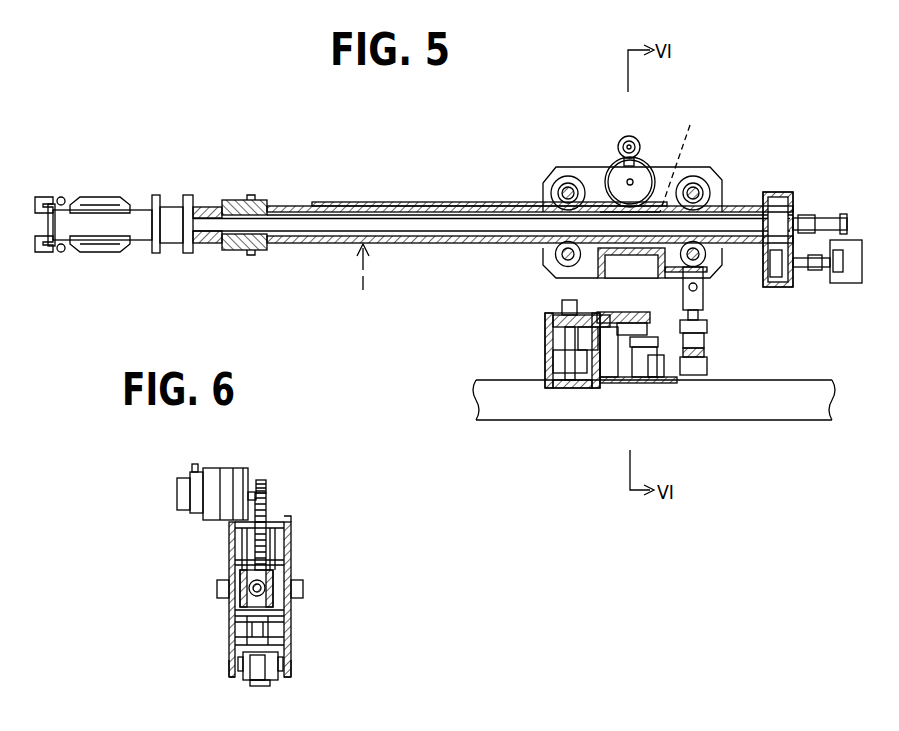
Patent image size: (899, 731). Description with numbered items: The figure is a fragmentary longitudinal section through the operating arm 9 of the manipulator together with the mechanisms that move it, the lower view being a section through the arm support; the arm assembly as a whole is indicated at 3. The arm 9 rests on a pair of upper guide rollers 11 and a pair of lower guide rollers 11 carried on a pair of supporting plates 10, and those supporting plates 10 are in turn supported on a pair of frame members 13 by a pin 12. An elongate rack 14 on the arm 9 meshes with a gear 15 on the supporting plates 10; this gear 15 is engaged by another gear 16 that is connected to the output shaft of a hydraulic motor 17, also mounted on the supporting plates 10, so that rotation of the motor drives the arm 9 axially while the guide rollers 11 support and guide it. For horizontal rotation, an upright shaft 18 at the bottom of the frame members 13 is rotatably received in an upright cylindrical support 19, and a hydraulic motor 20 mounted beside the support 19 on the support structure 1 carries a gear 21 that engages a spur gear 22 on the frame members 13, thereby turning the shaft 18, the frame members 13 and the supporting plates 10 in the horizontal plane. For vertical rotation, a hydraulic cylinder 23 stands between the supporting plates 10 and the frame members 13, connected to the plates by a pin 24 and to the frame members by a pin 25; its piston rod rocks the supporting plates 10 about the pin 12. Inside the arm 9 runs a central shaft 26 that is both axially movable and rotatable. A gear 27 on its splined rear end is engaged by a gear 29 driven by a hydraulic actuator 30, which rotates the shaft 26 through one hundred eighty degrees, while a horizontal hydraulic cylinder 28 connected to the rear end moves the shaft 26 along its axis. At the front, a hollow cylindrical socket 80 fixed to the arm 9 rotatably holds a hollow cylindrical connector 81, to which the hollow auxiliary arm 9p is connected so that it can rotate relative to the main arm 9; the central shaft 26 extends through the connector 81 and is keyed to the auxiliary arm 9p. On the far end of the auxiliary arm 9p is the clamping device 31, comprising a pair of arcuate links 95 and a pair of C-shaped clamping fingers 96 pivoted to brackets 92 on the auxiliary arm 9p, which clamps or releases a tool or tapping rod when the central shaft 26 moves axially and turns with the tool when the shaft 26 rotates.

In FIG. 5, the support structure 1 is at (503, 420).
In FIG. 5, the feed unit 3 is at (363, 281).
In FIG. 5, the operating arm 9 is at (290, 206).
In FIG. 6, the operating arm 9 is at (240, 578).
In FIG. 5, the auxiliary arm 9p is at (135, 210).
In FIG. 5, the supporting plates 10 is at (545, 183).
In FIG. 6, the supporting plates 10 is at (291, 520).
In FIG. 5, the guide rollers 11 is at (568, 176).
In FIG. 6, the guide rollers 11 is at (235, 632).
In FIG. 5, the pin 12 is at (652, 155).
In FIG. 6, the pin 12 is at (217, 589).
In FIG. 5, the frame members 13 is at (600, 270).
In FIG. 6, the frame members 13 is at (229, 670).
In FIG. 5, the rack 14 is at (380, 202).
In FIG. 6, the rack 14 is at (273, 580).
In FIG. 5, the gear 15 is at (610, 172).
In FIG. 6, the gear 15 is at (267, 512).
In FIG. 5, the gear 16 is at (640, 146).
In FIG. 6, the gear 16 is at (267, 483).
In FIG. 6, the hydraulic motor 17 is at (215, 480).
In FIG. 5, the upright shaft 18 is at (625, 383).
In FIG. 5, the upright cylindrical support 19 is at (655, 377).
In FIG. 5, the hydraulic motor 20 is at (558, 362).
In FIG. 5, the gear 21 is at (555, 322).
In FIG. 5, the spur gear 22 is at (600, 302).
In FIG. 5, the hydraulic cylinder 23 is at (705, 332).
In FIG. 6, the hydraulic cylinder 23 is at (270, 683).
In FIG. 5, the pin 24 is at (698, 290).
In FIG. 6, the pin 24 is at (278, 665).
In FIG. 5, the pin 25 is at (706, 355).
In FIG. 5, the central shaft 26 is at (338, 224).
In FIG. 6, the central shaft 26 is at (265, 590).
In FIG. 5, the gear 27 is at (778, 194).
In FIG. 5, the hydraulic cylinder 28 is at (826, 216).
In FIG. 5, the gear 29 is at (787, 283).
In FIG. 5, the hydraulic actuator 30 is at (850, 283).
In FIG. 5, the clamping device 31 is at (97, 186).
In FIG. 5, the hollow cylindrical socket 80 is at (243, 200).
In FIG. 5, the hollow cylindrical connector 81 is at (210, 207).
In FIG. 5, the brackets 92 is at (63, 197).
In FIG. 5, the arcuate links 95 is at (110, 198).
In FIG. 5, the clamping fingers 96 is at (48, 198).